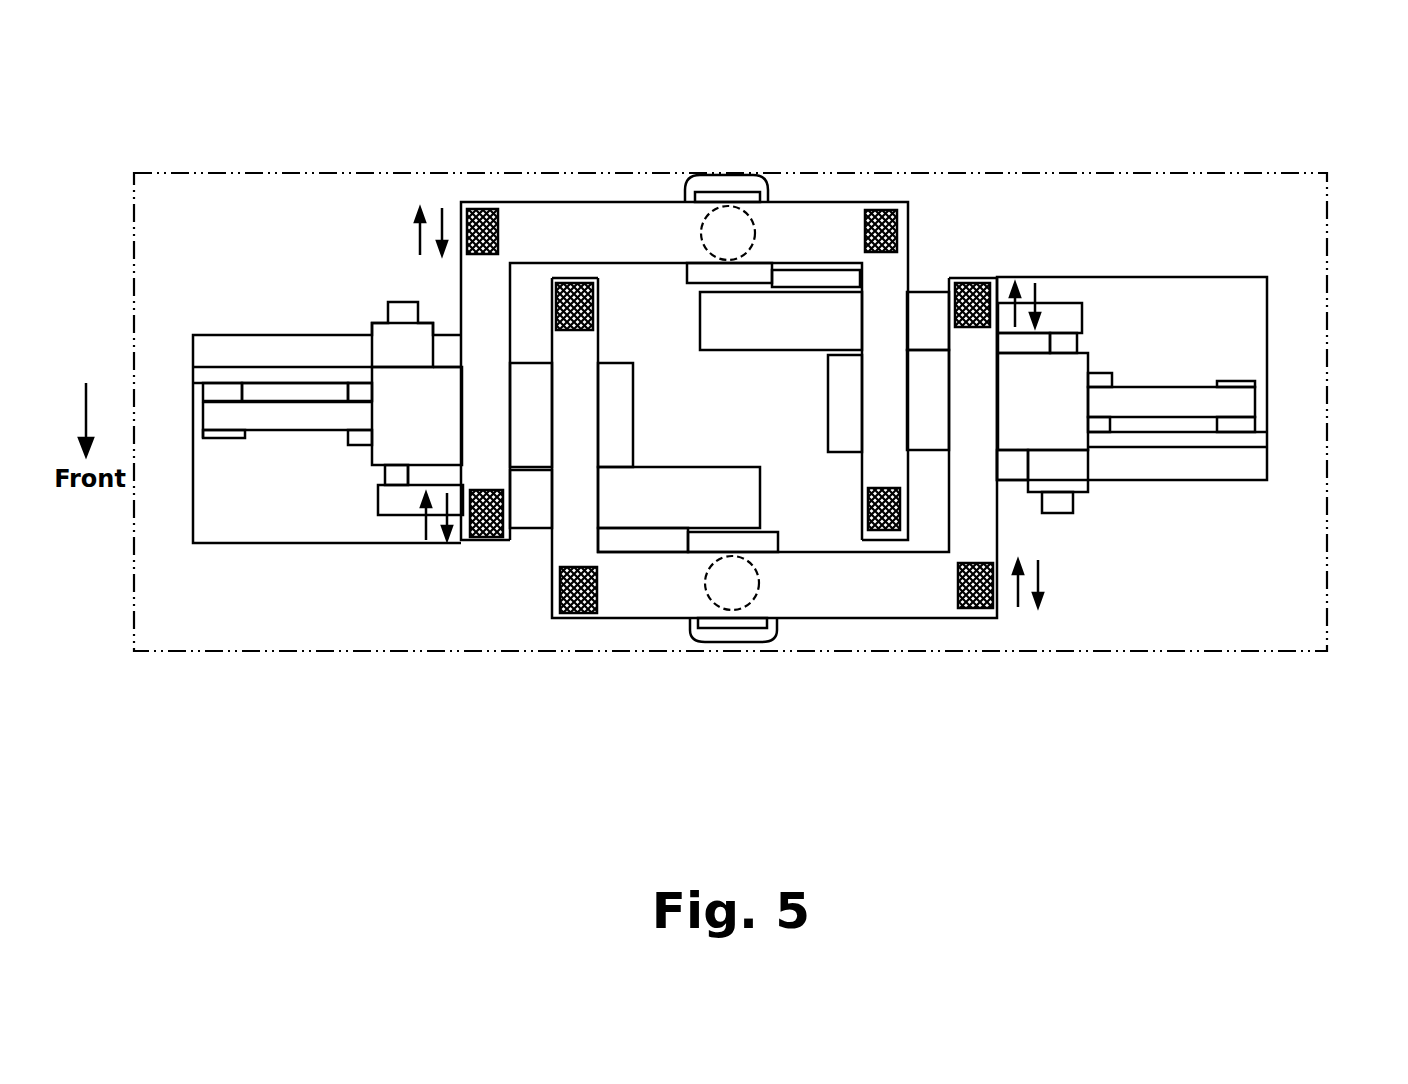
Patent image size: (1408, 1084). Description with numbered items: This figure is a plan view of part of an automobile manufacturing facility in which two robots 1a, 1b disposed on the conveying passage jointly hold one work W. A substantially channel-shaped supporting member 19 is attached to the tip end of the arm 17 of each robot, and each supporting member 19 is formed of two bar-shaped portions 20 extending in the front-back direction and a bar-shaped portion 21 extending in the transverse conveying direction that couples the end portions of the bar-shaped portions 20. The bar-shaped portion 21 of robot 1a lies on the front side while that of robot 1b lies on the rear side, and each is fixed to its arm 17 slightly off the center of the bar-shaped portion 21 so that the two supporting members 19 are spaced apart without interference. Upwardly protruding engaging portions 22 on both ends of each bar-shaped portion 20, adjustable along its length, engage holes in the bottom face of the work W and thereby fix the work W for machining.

The work W is at (1184, 172).
The robot 1a is at (1282, 377).
The robot 1b is at (305, 590).
The arm 17 is at (768, 178).
The supporting member 19 is at (729, 407).
The bar-shaped portion 20 is at (860, 400).
The bar-shaped portion 21 is at (665, 200).
The engaging portion 22 is at (483, 208).